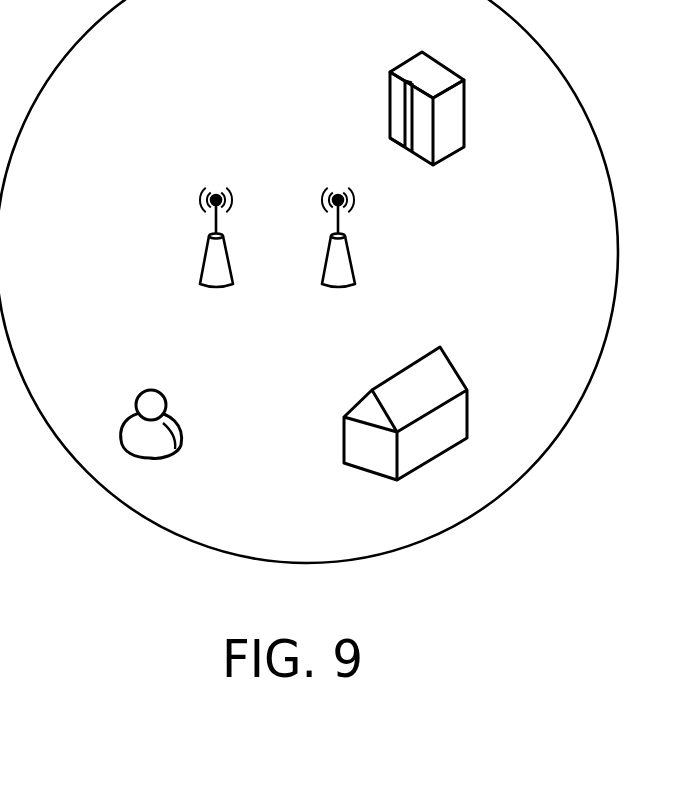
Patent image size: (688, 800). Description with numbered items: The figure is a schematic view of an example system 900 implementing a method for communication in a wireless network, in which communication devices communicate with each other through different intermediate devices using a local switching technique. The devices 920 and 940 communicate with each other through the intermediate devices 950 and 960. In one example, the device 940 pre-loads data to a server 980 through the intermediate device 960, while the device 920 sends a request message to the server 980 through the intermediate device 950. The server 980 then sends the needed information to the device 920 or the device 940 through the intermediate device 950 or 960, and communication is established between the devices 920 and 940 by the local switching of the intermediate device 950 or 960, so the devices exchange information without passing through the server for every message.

The wireless communication environment 900 is at (608, 571).
The device 920 is at (164, 388).
The device 940 is at (455, 367).
The intermediate device 950 is at (204, 256).
The intermediate device 960 is at (351, 257).
The server 980 is at (442, 64).